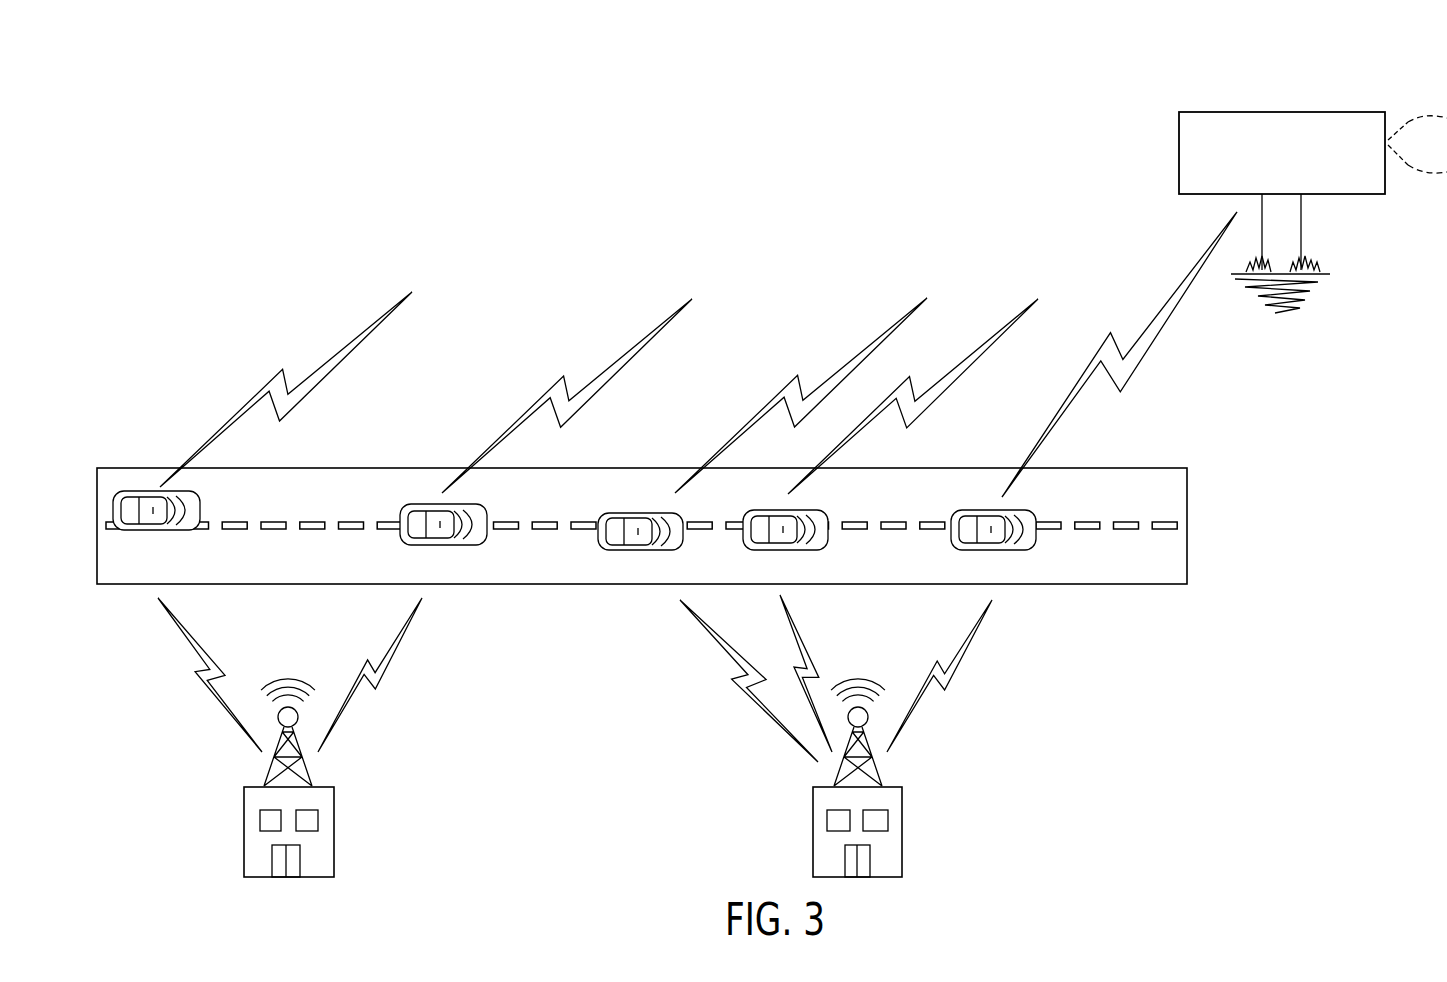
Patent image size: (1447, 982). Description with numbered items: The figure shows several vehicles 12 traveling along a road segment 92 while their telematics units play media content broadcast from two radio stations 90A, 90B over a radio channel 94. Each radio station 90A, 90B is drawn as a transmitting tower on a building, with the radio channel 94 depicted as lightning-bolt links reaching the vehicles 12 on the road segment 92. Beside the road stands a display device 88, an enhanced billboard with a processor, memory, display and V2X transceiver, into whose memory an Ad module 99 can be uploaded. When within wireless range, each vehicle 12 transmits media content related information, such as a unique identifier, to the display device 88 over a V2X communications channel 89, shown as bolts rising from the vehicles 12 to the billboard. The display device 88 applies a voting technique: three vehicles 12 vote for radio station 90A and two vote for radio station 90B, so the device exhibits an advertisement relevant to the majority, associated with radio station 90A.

The vehicle 12 is at (150, 527).
The display device 88 is at (1250, 108).
The V2X communications channel 89 is at (282, 370).
The radio station 90A is at (904, 820).
The radio station 90B is at (334, 820).
The road segment 92 is at (535, 598).
The radio channel 94 is at (193, 652).
The Ad module 99 is at (1443, 158).